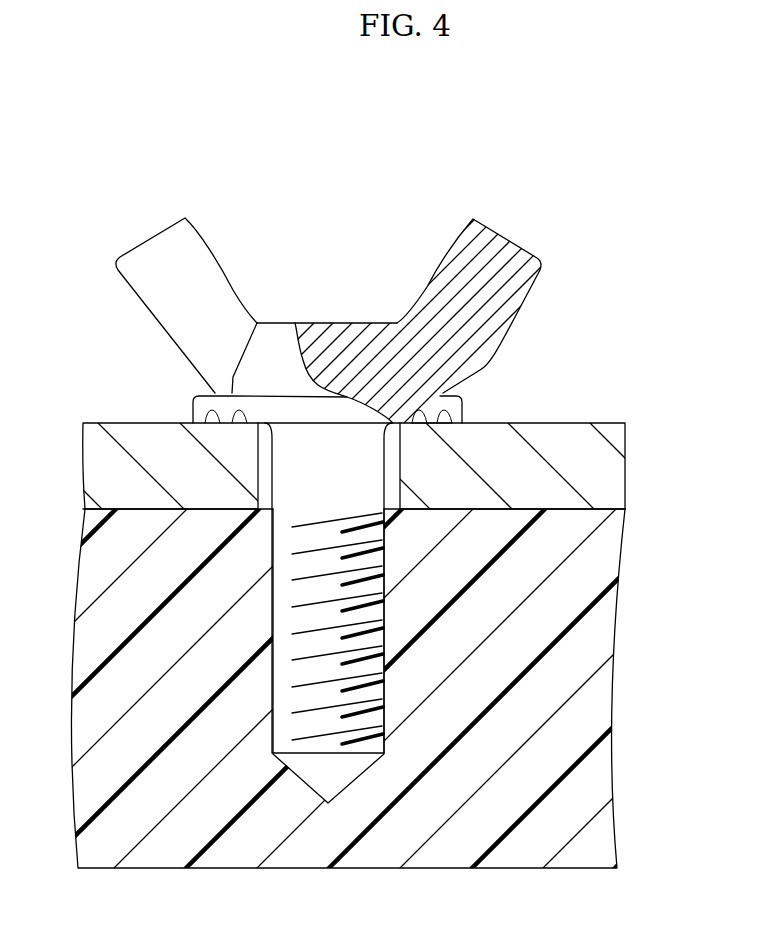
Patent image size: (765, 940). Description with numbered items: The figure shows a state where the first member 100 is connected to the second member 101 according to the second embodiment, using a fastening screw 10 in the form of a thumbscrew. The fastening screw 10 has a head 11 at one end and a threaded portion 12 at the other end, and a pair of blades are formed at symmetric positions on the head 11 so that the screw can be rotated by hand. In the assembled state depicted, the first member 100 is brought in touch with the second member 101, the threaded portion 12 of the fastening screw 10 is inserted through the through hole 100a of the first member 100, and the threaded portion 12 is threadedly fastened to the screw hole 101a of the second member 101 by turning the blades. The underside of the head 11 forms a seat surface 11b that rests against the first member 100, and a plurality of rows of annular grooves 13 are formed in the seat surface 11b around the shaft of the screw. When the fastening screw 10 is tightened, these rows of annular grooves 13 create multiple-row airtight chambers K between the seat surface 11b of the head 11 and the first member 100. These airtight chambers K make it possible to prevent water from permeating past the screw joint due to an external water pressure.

The fastening screw 10 is at (371, 336).
The head 11 is at (280, 342).
The seat surface 11b is at (237, 425).
The threaded portion 12 is at (287, 679).
The annular grooves 13 is at (437, 407).
The first member 100 is at (132, 432).
The through hole 100a is at (400, 463).
The second member 101 is at (310, 853).
The screw hole 101a is at (386, 621).
The airtight chambers K is at (415, 426).